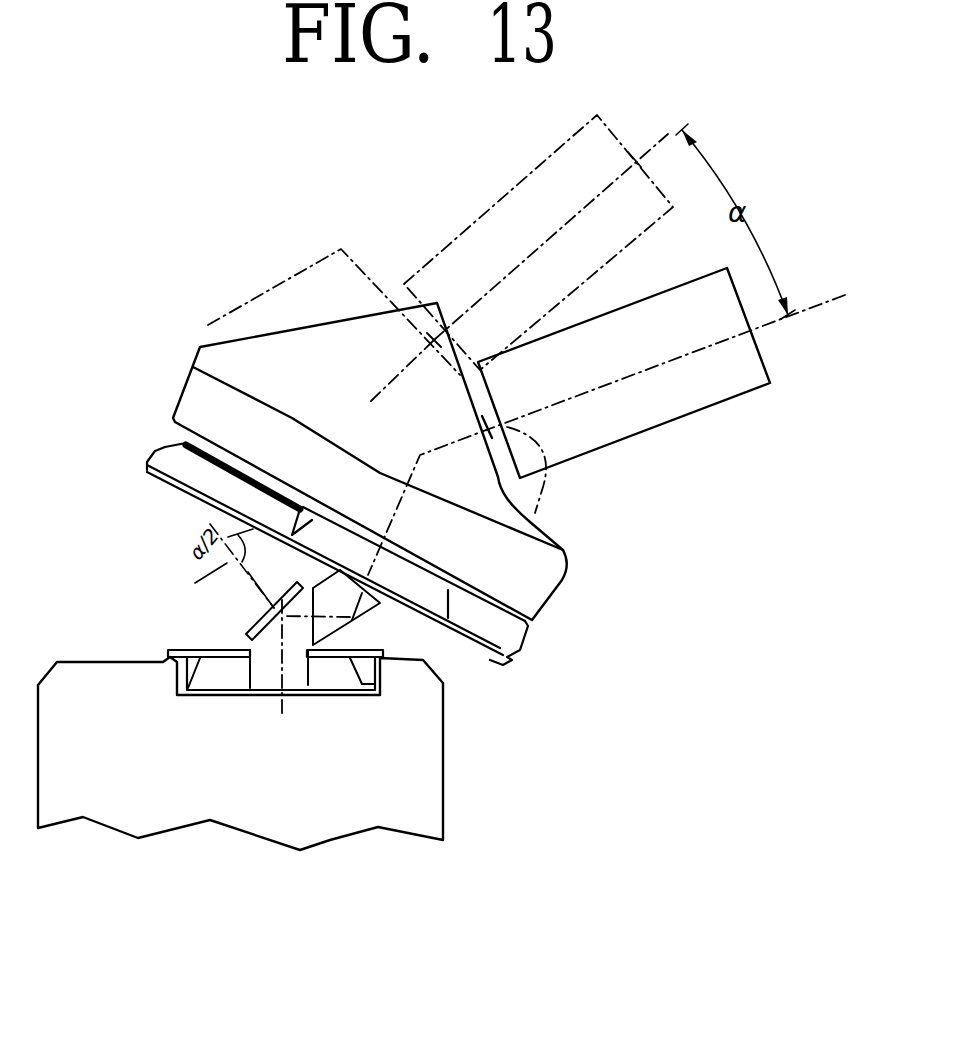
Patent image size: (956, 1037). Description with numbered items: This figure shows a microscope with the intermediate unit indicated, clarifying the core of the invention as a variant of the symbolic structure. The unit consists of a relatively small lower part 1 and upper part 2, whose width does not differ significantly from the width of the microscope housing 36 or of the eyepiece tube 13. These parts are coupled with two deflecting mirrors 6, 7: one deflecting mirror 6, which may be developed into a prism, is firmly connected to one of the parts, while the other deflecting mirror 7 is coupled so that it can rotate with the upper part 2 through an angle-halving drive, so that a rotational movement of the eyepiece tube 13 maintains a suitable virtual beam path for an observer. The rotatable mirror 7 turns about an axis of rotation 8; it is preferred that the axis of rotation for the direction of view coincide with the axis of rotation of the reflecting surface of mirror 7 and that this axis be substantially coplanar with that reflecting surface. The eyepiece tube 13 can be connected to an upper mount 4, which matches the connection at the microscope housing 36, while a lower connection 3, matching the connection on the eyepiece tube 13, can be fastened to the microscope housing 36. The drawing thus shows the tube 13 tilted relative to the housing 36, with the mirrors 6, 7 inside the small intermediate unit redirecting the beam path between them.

The lower part 1 is at (187, 650).
The upper part 2 is at (513, 657).
The lower connection 3 is at (373, 648).
The upper mount 4 is at (440, 600).
The deflecting mirror 6 is at (400, 600).
The deflecting mirror 7 is at (276, 630).
The axis of rotation 8 is at (283, 617).
The eyepiece tube 13 is at (552, 592).
The microscope housing 36 is at (443, 817).